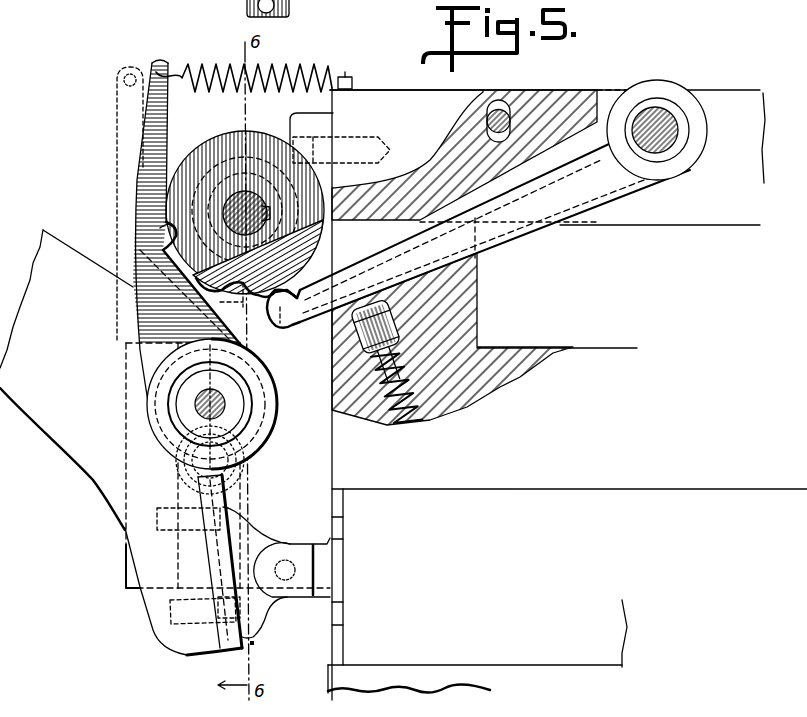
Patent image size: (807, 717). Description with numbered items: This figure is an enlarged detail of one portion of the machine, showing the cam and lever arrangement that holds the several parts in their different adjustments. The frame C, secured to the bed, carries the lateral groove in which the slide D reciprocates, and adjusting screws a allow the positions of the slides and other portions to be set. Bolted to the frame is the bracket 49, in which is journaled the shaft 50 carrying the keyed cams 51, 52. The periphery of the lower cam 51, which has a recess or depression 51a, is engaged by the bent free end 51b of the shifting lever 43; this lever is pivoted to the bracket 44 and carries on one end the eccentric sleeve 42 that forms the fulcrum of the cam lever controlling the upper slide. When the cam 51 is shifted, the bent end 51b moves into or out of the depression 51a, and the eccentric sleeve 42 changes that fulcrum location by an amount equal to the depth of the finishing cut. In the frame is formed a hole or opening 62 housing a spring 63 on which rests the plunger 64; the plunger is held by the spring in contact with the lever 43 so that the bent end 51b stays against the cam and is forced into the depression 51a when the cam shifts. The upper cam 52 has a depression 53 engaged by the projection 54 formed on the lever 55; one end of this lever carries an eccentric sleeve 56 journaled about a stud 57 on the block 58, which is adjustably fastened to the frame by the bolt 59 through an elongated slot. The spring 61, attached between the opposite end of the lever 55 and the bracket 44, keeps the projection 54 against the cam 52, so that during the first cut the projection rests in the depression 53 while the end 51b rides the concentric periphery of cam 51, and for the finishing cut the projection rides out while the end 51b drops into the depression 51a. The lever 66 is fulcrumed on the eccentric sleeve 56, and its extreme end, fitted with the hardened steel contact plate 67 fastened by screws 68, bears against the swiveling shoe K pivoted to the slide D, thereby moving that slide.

The eccentric sleeve 42 is at (677, 140).
The shifting lever 43 is at (495, 233).
The bracket 44 is at (398, 88).
The bracket 49 is at (307, 118).
The shaft 50 is at (265, 202).
The lower cam 51 is at (270, 237).
The recess or depression 51a is at (250, 290).
The bent free end 51b is at (300, 318).
The upper cam 52 is at (203, 153).
The depression 53 is at (168, 232).
The projection 54 is at (160, 227).
The lever 55 is at (138, 142).
The eccentric sleeve 56 is at (245, 427).
The stud 57 is at (237, 408).
The block 58 is at (126, 568).
The bolt 59 is at (290, 9).
The spring 61 is at (197, 58).
The hole or opening 62 is at (437, 420).
The spring 63 is at (404, 428).
The plunger 64 is at (381, 343).
The lever 66 is at (190, 643).
The hardened steel contact plate 67 is at (212, 568).
The screws 68 is at (219, 510).
The adjusting screws a is at (500, 110).
The swiveling shoe K is at (257, 620).
The slide D is at (417, 566).
The frame C is at (372, 688).